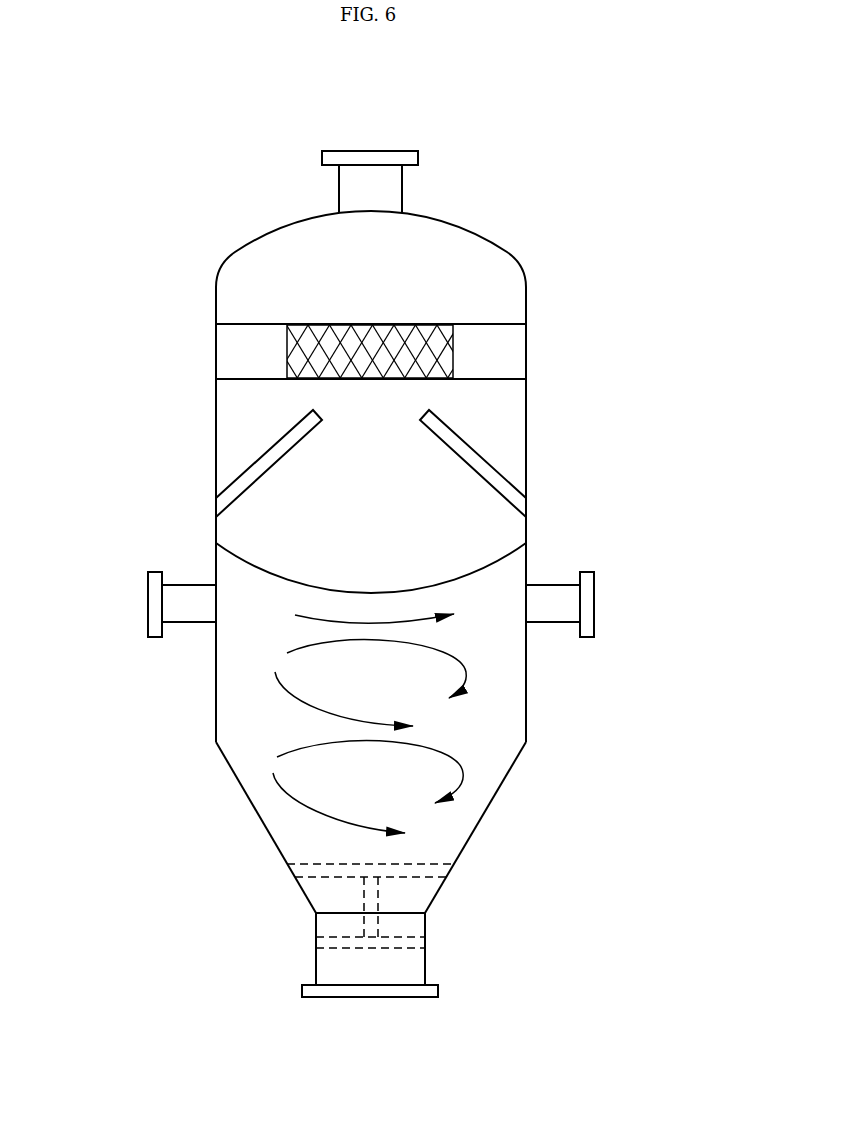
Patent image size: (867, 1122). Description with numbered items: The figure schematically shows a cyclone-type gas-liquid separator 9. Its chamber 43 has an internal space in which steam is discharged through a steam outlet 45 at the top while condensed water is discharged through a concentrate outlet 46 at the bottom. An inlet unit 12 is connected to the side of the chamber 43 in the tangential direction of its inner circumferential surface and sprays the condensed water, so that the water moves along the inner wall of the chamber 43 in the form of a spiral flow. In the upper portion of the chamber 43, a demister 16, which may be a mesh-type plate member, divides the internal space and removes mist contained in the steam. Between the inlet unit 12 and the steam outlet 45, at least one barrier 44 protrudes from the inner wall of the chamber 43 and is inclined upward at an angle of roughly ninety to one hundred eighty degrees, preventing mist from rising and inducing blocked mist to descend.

The cyclone-type gas-liquid separator 9 is at (540, 93).
The inlet unit 12 is at (148, 583).
The demister 16 is at (322, 335).
The chamber 43 is at (518, 265).
The barrier 44 is at (278, 453).
The steam outlet 45 is at (372, 158).
The concentrate outlet 46 is at (383, 990).